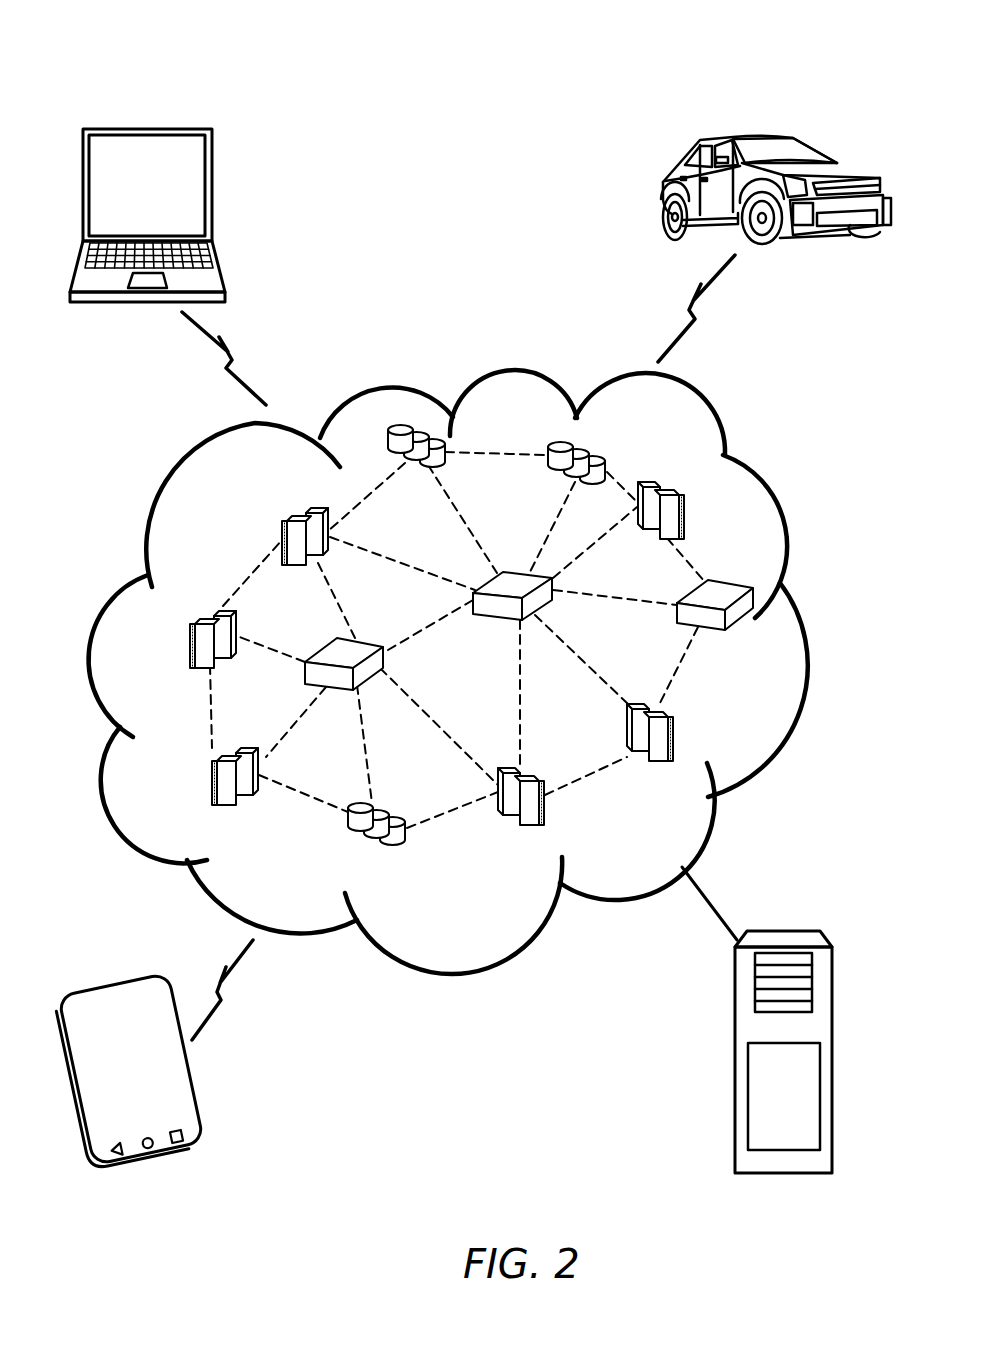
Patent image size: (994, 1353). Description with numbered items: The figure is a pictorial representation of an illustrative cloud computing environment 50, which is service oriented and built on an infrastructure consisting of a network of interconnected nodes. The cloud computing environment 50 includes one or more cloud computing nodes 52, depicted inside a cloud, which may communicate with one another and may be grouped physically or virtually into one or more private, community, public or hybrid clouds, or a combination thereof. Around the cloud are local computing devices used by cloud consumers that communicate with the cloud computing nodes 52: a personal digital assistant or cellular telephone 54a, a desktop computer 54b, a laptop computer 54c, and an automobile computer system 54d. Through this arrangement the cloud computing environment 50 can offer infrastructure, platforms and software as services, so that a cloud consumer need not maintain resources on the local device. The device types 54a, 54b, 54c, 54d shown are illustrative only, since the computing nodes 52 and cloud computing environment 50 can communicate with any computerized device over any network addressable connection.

The cloud computing environment 50 is at (358, 80).
The cloud computing node 52 is at (198, 661).
The personal digital assistant (PDA) or cellular telephone 54a is at (167, 1154).
The desktop computer 54b is at (735, 1148).
The laptop computer 54c is at (138, 128).
The automobile computer system 54d is at (750, 136).